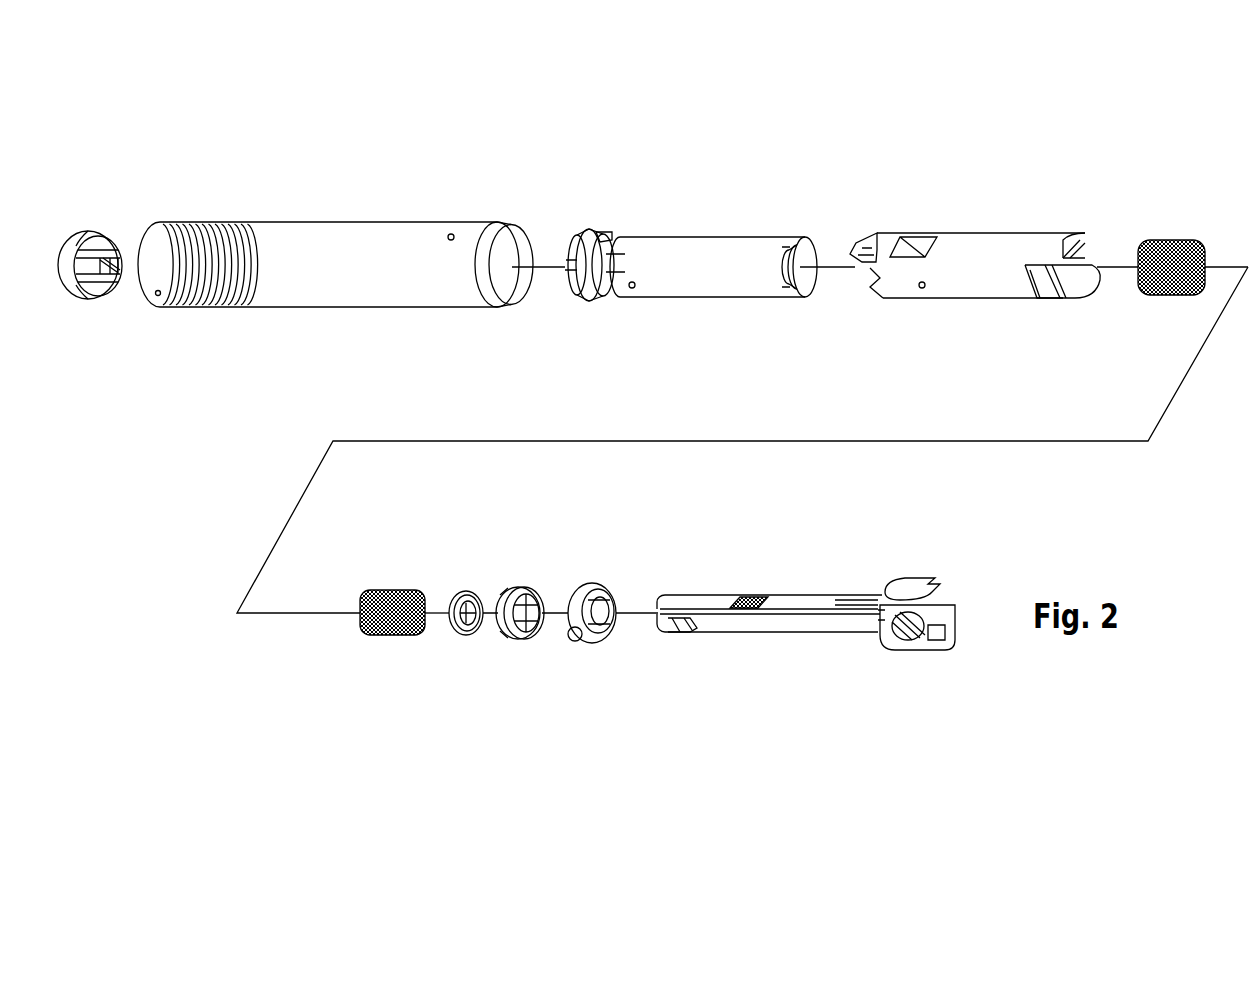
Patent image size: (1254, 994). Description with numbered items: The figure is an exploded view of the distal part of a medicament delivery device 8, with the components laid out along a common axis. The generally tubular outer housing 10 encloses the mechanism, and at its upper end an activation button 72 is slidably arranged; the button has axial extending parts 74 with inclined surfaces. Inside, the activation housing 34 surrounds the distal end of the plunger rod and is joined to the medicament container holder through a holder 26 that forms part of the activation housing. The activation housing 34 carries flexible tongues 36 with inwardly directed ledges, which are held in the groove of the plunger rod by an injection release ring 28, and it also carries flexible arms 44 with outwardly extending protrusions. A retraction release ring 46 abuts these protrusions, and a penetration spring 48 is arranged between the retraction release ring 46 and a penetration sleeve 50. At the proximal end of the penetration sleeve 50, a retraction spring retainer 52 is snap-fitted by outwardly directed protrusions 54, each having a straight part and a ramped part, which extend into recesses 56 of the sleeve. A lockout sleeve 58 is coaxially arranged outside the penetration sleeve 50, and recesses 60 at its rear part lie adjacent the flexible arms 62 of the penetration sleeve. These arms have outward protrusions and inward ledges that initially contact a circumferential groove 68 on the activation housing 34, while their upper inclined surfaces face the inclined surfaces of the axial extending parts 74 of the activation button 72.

The medicament delivery device 8 is at (483, 183).
The outer housing 10 is at (345, 292).
The holder 26 is at (920, 584).
The injection release ring 28 is at (580, 592).
The activation housing 34 is at (800, 634).
The flexible tongues 36 is at (855, 600).
The flexible arms 44 is at (750, 598).
The retraction release ring 46 is at (465, 638).
The penetration spring 48 is at (383, 638).
The penetration sleeve 50 is at (710, 252).
The retraction spring retainer 52 is at (522, 640).
The outwardly directed protrusions 54 is at (505, 590).
The recesses 56 is at (790, 297).
The lockout sleeve 58 is at (990, 250).
The recesses 60 is at (870, 240).
The flexible arms 62 is at (610, 235).
The circumferential groove 68 is at (678, 596).
The activation button 72 is at (76, 298).
The axial extending parts 74 is at (100, 238).